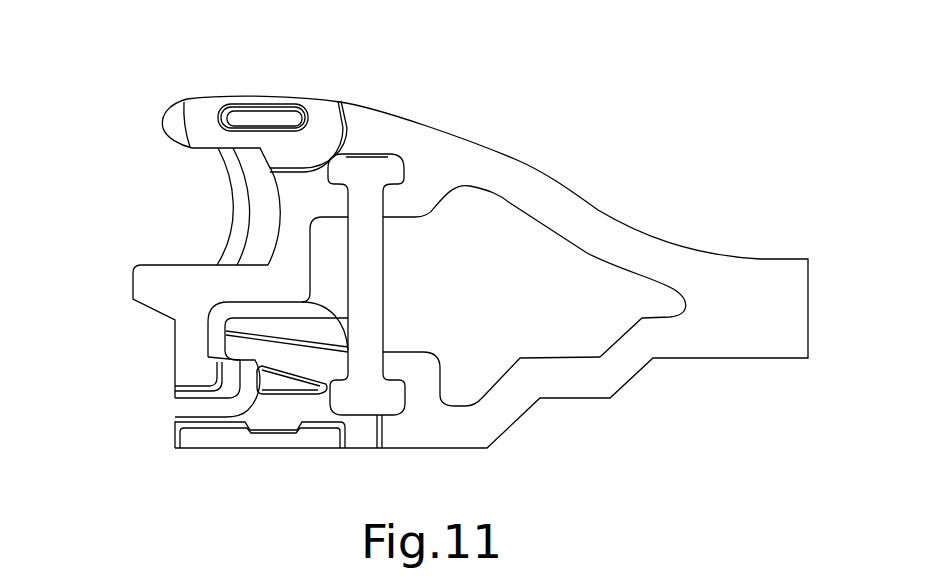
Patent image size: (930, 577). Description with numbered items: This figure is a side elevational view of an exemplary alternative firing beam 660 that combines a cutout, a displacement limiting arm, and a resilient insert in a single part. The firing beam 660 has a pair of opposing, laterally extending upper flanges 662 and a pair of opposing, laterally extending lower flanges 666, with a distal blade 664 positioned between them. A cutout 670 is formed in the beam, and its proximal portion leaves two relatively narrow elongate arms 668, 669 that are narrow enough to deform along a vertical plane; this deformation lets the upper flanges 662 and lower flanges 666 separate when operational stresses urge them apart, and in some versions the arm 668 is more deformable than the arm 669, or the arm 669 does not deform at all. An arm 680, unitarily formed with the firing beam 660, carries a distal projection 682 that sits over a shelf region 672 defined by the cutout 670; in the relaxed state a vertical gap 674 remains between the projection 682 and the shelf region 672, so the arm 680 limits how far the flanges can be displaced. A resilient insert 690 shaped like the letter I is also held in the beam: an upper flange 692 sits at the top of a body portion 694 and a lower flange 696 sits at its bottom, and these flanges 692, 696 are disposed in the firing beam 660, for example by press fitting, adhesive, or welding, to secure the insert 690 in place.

The firing beam 660 is at (143, 75).
The upper flanges 662 is at (262, 118).
The distal blade 664 is at (235, 218).
The lower flanges 666 is at (225, 432).
The elongate arm 668 is at (595, 228).
The elongate arm 669 is at (568, 380).
The cutout 670 is at (176, 406).
The shelf region 672 is at (260, 354).
The vertical gap 674 is at (213, 358).
The arm 680 is at (290, 322).
The distal projection 682 is at (243, 342).
The resilient insert 690 is at (384, 268).
The upper flange 692 is at (373, 165).
The body portion 694 is at (375, 320).
The lower flange 696 is at (386, 402).